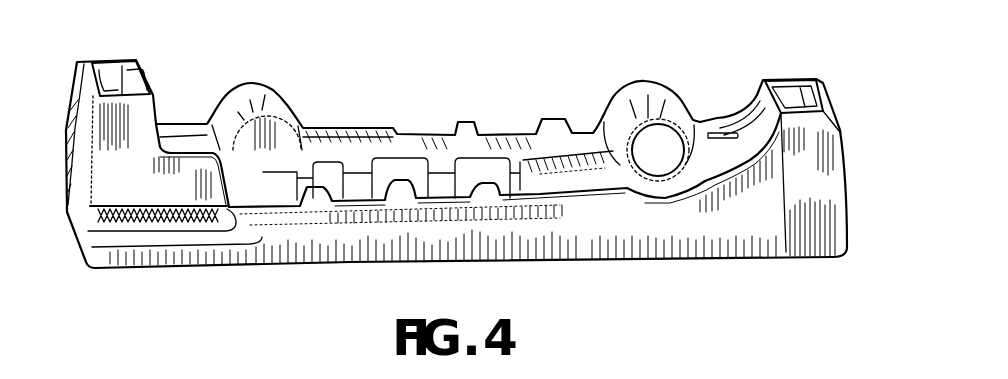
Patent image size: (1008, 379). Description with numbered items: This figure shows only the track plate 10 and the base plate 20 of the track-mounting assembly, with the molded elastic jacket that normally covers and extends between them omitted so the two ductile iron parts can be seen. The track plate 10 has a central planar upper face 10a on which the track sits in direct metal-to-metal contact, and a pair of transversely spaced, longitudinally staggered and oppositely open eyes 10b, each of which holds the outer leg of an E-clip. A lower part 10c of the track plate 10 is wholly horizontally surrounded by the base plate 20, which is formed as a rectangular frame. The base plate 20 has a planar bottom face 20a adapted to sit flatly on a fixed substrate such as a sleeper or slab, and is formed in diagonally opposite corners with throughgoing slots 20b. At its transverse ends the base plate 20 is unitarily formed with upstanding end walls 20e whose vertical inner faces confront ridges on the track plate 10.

The track plate 10 is at (529, 150).
The central planar upper face 10a is at (465, 118).
The eyes 10b is at (257, 86).
The lower part of the track plate 10c is at (761, 77).
The base plate 20 is at (583, 216).
The planar bottom face 20a is at (831, 108).
The throughgoing slots 20b is at (803, 99).
The upstanding end walls 20e is at (85, 61).